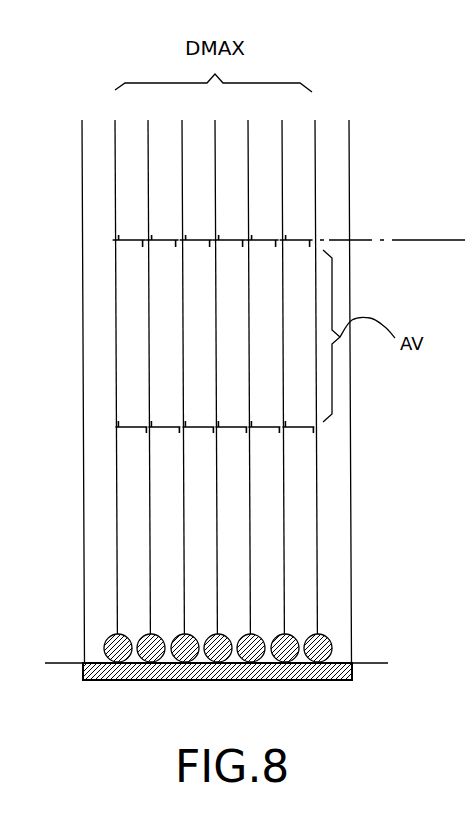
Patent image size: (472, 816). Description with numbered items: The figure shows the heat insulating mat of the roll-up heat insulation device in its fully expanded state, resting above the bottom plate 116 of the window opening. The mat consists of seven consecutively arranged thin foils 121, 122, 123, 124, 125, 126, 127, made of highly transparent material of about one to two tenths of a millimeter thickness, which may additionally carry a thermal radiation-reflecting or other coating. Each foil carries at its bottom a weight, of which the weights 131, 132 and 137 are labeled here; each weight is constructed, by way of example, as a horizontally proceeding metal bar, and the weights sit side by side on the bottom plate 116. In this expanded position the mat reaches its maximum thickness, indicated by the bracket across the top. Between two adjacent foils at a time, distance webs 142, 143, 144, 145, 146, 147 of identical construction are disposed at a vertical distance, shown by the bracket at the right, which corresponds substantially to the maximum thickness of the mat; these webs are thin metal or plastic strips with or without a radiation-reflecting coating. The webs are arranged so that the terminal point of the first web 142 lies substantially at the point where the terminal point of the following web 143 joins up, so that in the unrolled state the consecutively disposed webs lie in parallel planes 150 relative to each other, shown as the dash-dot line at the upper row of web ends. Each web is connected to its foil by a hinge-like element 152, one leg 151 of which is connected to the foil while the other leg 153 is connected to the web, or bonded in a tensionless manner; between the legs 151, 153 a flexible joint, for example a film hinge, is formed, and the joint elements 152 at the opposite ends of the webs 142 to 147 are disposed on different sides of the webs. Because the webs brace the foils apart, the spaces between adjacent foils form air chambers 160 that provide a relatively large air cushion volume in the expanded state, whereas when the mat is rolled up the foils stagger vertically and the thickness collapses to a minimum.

The bottom plate 116 is at (220, 680).
The foil 121 is at (114, 632).
The foil 122 is at (152, 583).
The foil 123 is at (185, 532).
The foil 124 is at (218, 480).
The foil 125 is at (248, 370).
The foil 126 is at (282, 354).
The foil 127 is at (315, 333).
The weight 131 is at (113, 678).
The weight 132 is at (152, 680).
The weight 137 is at (312, 680).
The distance web 142 is at (133, 243).
The distance web 143 is at (166, 433).
The distance web 144 is at (232, 433).
The distance web 145 is at (305, 479).
The distance web 146 is at (265, 433).
The distance web 147 is at (300, 433).
The parallel plane 150 is at (408, 237).
The leg 151 is at (152, 236).
The hinge-like element 152 is at (288, 233).
The leg 153 is at (152, 236).
The air chamber 160 is at (230, 155).